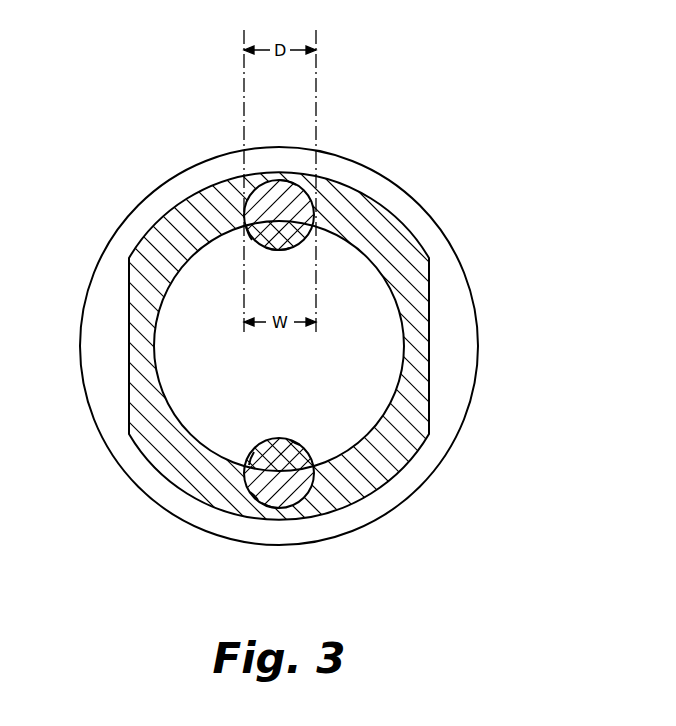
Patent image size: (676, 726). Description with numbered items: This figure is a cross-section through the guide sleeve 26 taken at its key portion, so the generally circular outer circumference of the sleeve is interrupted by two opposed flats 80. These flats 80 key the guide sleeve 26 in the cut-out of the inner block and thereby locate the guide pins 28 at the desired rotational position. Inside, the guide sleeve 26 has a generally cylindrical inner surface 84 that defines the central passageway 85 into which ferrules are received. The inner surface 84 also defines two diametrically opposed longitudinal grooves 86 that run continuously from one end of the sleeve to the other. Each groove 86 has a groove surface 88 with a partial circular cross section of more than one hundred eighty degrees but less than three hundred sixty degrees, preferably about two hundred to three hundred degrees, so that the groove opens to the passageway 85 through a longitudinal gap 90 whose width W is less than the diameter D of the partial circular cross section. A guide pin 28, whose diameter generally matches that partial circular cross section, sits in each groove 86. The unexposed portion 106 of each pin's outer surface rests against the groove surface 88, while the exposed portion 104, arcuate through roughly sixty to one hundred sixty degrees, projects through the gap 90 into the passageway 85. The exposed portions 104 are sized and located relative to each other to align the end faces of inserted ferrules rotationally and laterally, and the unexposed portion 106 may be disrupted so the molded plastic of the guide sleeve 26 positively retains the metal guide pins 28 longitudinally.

The guide sleeve 26 is at (477, 285).
The guide pins 28 is at (291, 221).
The opposed flats 80 is at (128, 403).
The inner surface 84 is at (382, 275).
The passageway 85 is at (175, 352).
The longitudinal grooves 86 is at (265, 184).
The groove surface 88 is at (254, 491).
The longitudinal gap 90 is at (247, 227).
The exposed portion 104 is at (282, 252).
The unexposed portion 106 is at (287, 179).